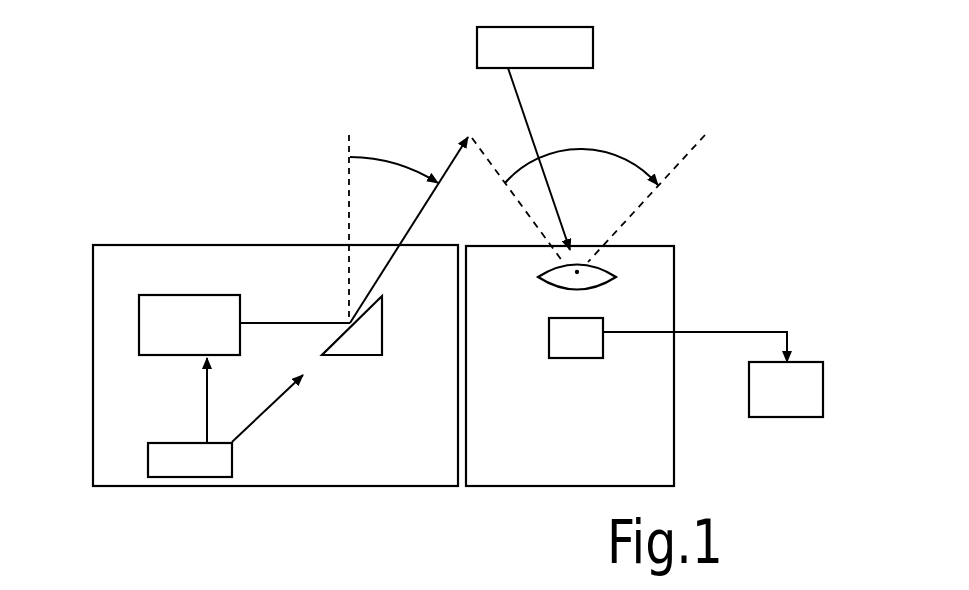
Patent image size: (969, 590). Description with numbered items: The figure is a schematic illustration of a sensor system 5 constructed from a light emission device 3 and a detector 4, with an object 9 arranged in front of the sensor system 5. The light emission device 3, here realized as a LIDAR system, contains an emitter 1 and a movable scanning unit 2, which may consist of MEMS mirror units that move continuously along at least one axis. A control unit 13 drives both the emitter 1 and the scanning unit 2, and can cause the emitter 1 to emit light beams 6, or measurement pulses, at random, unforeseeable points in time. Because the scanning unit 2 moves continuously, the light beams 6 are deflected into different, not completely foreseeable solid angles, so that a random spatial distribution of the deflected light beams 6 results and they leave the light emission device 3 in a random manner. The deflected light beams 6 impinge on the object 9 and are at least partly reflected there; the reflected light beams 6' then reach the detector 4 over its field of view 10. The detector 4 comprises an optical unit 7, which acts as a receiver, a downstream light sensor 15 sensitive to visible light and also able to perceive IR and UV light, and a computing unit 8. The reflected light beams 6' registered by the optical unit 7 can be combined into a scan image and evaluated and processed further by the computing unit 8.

The emitter 1 is at (195, 358).
The movable scanning unit 2 is at (358, 357).
The light emission device 3 is at (93, 380).
The detector 4 is at (674, 372).
The sensor system 5 is at (118, 190).
The light beams 6 is at (295, 292).
The reflected light beams 6' is at (557, 159).
The optical unit 7 is at (597, 282).
The computing unit 8 is at (823, 390).
The object 9 is at (593, 47).
The field of view 10 is at (637, 170).
The control unit 13 is at (233, 457).
The light sensor 15 is at (587, 358).